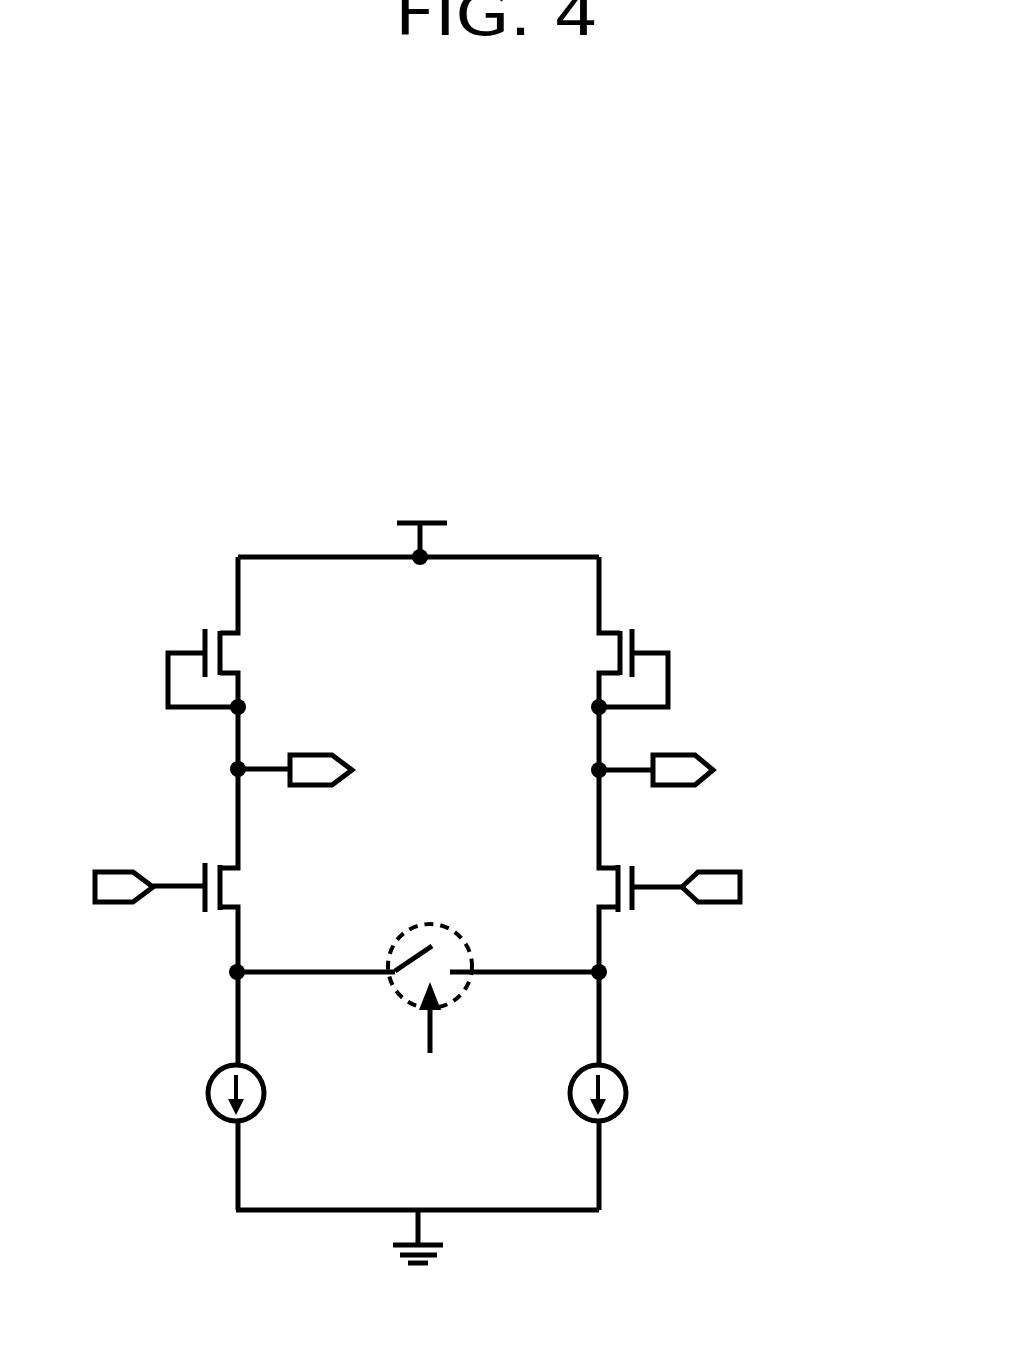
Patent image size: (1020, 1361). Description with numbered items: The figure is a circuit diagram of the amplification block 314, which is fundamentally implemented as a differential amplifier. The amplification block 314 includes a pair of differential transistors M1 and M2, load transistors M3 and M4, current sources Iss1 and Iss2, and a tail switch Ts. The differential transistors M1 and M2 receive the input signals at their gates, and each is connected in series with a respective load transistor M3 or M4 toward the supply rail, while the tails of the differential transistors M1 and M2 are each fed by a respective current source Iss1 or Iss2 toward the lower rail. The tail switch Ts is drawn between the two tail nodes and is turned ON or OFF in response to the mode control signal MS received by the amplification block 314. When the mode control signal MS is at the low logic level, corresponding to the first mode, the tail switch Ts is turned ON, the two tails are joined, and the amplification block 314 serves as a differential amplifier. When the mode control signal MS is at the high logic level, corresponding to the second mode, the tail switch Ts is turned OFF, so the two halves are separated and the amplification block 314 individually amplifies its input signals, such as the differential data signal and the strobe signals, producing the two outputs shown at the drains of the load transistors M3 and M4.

The amplification block 314 is at (728, 340).
The differential transistor M1 is at (586, 888).
The differential transistor M2 is at (251, 887).
The load transistor M3 is at (604, 668).
The load transistor M4 is at (233, 668).
The tail switch Ts is at (430, 925).
The mode control signal MS is at (431, 1043).
The current source Iss1 is at (215, 1070).
The current source Iss2 is at (617, 1072).